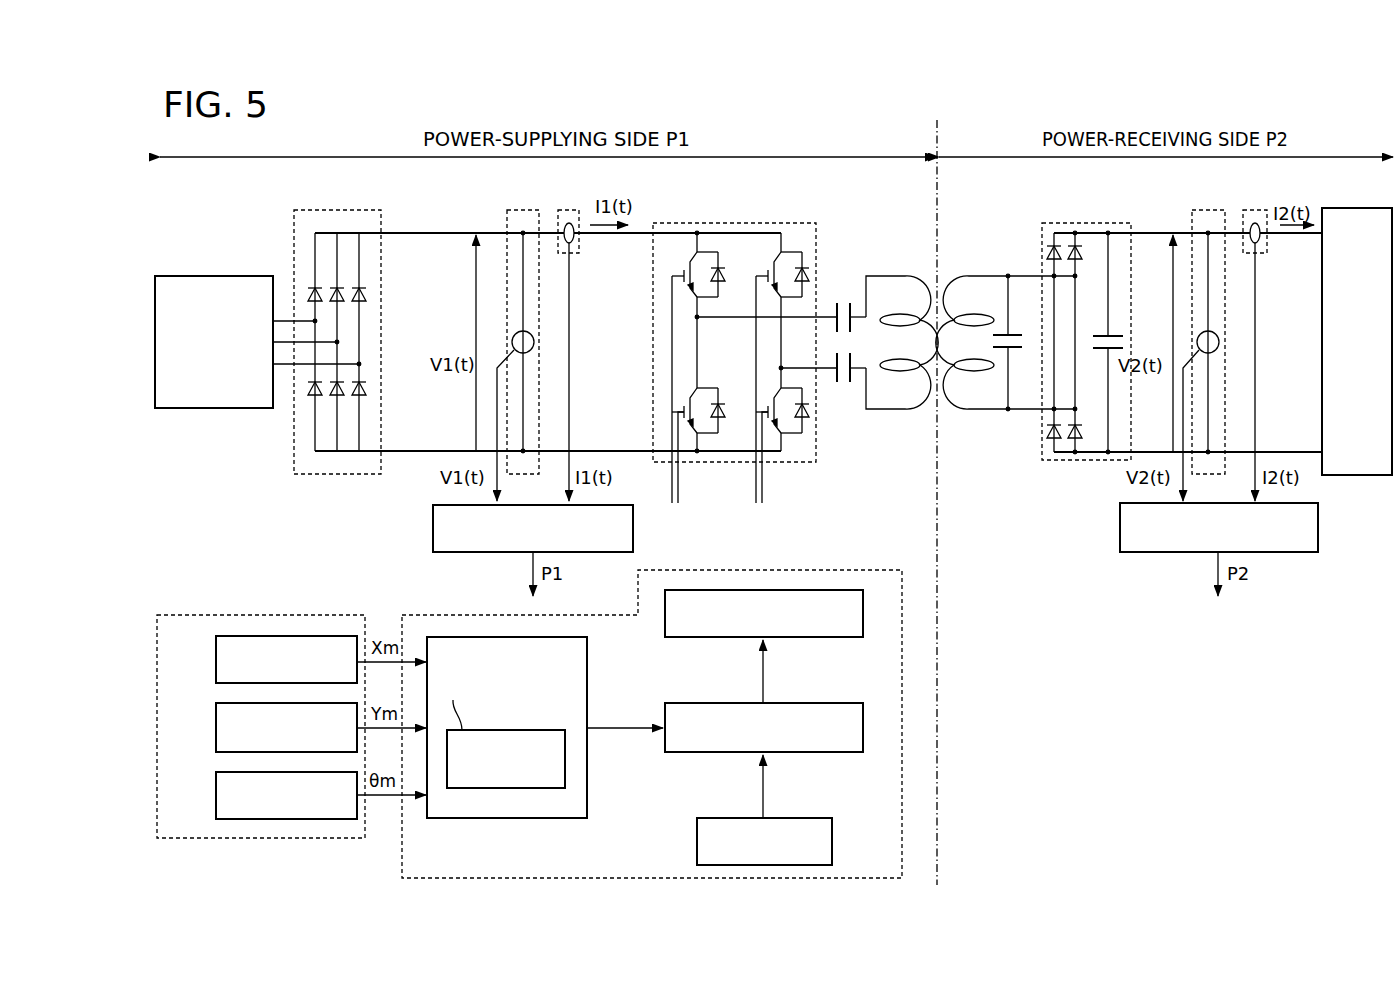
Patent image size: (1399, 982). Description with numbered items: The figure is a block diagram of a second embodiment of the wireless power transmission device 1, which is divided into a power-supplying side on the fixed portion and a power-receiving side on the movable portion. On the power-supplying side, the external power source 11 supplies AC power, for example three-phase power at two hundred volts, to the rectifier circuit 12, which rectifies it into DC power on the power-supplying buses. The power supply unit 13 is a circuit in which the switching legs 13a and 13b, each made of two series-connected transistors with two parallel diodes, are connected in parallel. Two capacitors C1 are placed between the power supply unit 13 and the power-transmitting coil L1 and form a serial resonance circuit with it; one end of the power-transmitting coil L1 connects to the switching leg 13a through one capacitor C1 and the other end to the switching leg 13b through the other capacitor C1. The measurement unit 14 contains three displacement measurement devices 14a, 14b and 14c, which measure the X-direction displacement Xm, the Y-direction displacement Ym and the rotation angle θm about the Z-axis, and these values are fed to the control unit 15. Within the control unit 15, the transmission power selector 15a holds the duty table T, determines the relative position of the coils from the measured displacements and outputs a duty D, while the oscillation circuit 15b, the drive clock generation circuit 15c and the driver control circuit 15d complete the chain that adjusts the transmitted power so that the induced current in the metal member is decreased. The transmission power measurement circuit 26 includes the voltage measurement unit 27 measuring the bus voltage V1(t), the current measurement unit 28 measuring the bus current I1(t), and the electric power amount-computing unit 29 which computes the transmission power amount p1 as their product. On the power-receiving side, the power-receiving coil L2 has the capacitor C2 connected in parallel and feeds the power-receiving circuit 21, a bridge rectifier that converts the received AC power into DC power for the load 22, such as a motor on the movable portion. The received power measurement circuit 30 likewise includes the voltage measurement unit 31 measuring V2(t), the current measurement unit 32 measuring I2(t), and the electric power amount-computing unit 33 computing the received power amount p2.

The wireless power transmission device 1 is at (956, 136).
The external power source 11 is at (215, 276).
The rectifier circuit 12 is at (311, 210).
The power supply unit 13 is at (733, 343).
The switching leg 13a is at (707, 243).
The switching leg 13b is at (788, 243).
The measurement unit 14 is at (261, 707).
The displacement measurement device 14a is at (216, 661).
The displacement measurement device 14b is at (216, 727).
The displacement measurement device 14c is at (216, 794).
The control unit 15 is at (652, 724).
The transmission power selector 15a is at (587, 665).
The oscillation circuit 15b is at (832, 840).
The drive clock generation circuit 15c is at (825, 752).
The driver control circuit 15d is at (825, 637).
The power-receiving circuit 21 is at (1068, 223).
The load 22 is at (1347, 208).
The transmission power measurement circuit 26 is at (532, 330).
The voltage measurement unit 27 is at (534, 342).
The current measurement unit 28 is at (574, 238).
The electric power amount-computing unit 29 is at (433, 527).
The received power measurement circuit 30 is at (1209, 330).
The voltage measurement unit 31 is at (1219, 340).
The current measurement unit 32 is at (1255, 223).
The electric power amount-computing unit 33 is at (1292, 552).
The power-transmitting coil L1 is at (916, 275).
The power-receiving coil L2 is at (955, 275).
The capacitor C1 is at (843, 382).
The capacitor C2 is at (1016, 347).